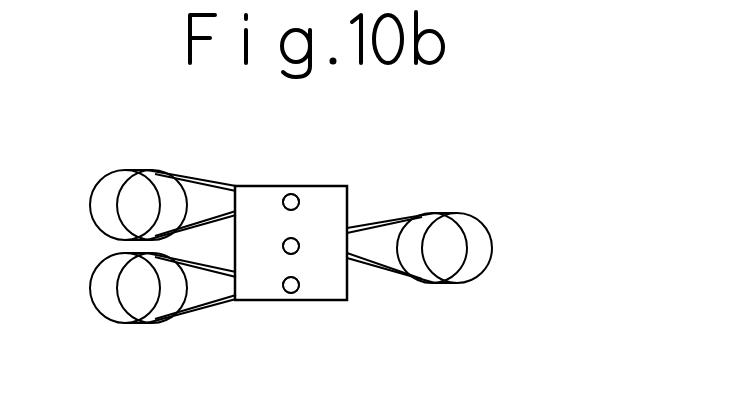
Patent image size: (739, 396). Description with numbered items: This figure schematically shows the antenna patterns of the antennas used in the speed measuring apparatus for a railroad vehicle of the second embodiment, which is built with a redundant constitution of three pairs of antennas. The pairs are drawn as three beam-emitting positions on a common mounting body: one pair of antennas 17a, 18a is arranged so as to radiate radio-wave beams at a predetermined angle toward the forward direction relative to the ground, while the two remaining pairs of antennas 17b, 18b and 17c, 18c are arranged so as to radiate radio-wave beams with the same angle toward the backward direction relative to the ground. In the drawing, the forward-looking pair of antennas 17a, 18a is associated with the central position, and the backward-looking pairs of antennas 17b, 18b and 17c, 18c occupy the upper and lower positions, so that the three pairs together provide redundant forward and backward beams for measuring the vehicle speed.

The antenna 17a is at (298, 241).
The antenna 18a is at (399, 200).
The antenna 17b is at (284, 196).
The antenna 18b is at (313, 158).
The antenna 17c is at (293, 293).
The antenna 18c is at (354, 322).